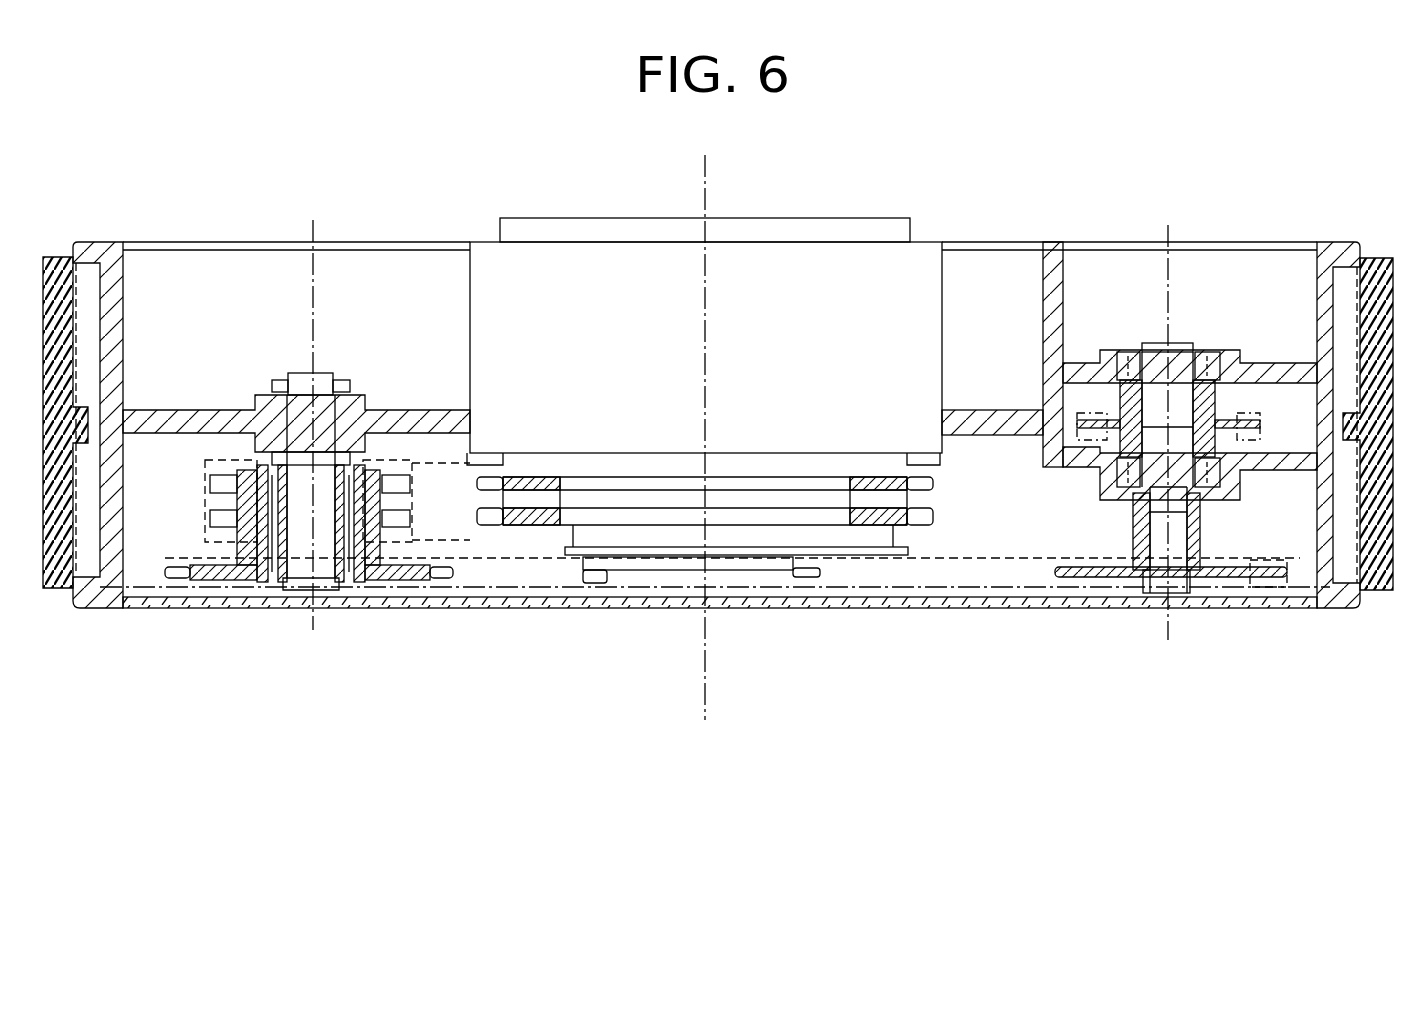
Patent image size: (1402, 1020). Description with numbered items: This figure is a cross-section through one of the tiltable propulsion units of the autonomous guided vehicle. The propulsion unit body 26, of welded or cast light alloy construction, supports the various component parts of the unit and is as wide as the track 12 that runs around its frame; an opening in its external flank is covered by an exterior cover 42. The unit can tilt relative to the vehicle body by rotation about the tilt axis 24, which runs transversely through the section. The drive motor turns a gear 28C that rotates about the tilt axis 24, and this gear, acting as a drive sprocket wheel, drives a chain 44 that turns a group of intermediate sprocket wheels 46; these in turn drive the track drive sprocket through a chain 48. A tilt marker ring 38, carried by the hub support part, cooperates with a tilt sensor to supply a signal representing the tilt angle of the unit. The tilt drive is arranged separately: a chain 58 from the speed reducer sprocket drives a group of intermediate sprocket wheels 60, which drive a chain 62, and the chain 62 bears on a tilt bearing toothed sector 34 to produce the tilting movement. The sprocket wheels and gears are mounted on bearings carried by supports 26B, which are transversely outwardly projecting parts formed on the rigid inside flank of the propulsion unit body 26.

The track 12 is at (1368, 262).
The tilt axis 24 is at (705, 687).
The propulsion unit body 26 is at (103, 226).
The support 26B is at (1037, 293).
The gear 28C is at (642, 572).
The tilt bearing toothed sector 34 is at (510, 470).
The tilt marker ring 38 is at (858, 555).
The exterior cover 42 is at (977, 608).
The chain 44 is at (586, 584).
The intermediate sprocket wheels 46 is at (1113, 578).
The chain 48 is at (1262, 427).
The chain 58 is at (183, 580).
The intermediate sprocket wheels 60 is at (400, 580).
The chain 62 is at (200, 460).